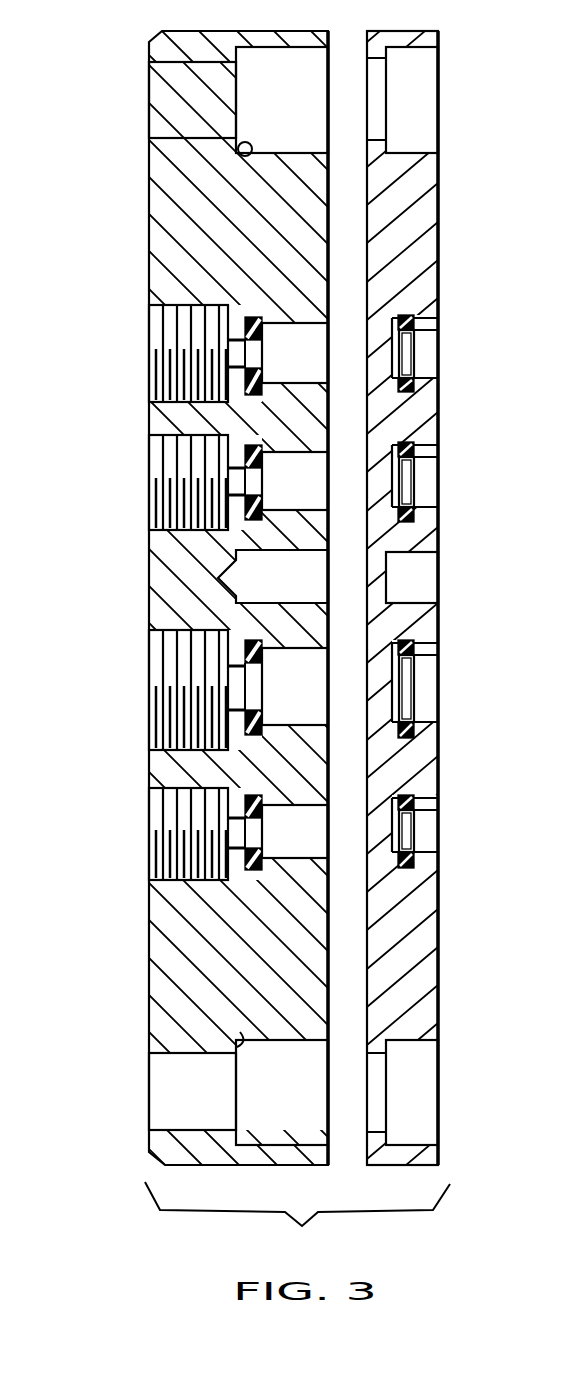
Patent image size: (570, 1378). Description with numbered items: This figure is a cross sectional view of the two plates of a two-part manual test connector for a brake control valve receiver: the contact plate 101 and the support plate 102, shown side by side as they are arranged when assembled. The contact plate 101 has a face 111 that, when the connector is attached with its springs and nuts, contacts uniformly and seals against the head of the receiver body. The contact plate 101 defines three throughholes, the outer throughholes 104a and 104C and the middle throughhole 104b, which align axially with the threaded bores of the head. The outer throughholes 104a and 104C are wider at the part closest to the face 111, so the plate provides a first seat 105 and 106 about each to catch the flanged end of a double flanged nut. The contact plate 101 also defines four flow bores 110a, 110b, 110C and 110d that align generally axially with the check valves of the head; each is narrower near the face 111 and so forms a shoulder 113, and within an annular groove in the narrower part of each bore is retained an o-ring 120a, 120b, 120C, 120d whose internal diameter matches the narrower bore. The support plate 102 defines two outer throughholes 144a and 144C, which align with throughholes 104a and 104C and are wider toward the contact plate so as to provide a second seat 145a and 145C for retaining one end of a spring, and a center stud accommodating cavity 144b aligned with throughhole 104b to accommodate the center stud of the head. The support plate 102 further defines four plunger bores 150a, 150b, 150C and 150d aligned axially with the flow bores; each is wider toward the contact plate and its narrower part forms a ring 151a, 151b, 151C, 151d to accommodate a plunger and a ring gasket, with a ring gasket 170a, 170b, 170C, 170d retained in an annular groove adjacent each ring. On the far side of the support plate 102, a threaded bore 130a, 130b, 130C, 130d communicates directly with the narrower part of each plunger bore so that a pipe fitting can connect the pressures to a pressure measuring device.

The contact plate 101 is at (420, 944).
The support plate 102 is at (165, 944).
The outer throughhole 104a is at (425, 1090).
The middle throughhole 104b is at (425, 578).
The outer throughhole 104C is at (425, 100).
The first seat 105 is at (425, 1048).
The first seat 106 is at (388, 50).
The flow bore 110a is at (427, 832).
The flow bore 110b is at (427, 685).
The flow bore 110C is at (427, 483).
The flow bore 110d is at (427, 355).
The face 111 is at (440, 237).
The shoulder 113 is at (393, 332).
The o-ring 120a is at (412, 858).
The o-ring 120b is at (412, 728).
The o-ring 120C is at (412, 512).
The o-ring 120d is at (412, 383).
The threaded bore 130a is at (165, 835).
The threaded bore 130b is at (165, 690).
The threaded bore 130C is at (165, 482).
The threaded bore 130d is at (165, 353).
The outer throughhole 144a is at (160, 1088).
The center stud accommodating cavity 144b is at (236, 578).
The outer throughhole 144C is at (160, 97).
The second seat 145a is at (240, 1032).
The second seat 145C is at (238, 154).
The plunger bore 150a is at (306, 857).
The plunger bore 150b is at (306, 727).
The plunger bore 150C is at (306, 456).
The plunger bore 150d is at (306, 328).
The ring 151a is at (245, 805).
The ring 151b is at (245, 653).
The ring 151C is at (245, 450).
The ring 151d is at (245, 322).
The ring gasket 170a is at (250, 860).
The ring gasket 170b is at (250, 722).
The ring gasket 170C is at (250, 508).
The ring gasket 170d is at (250, 380).